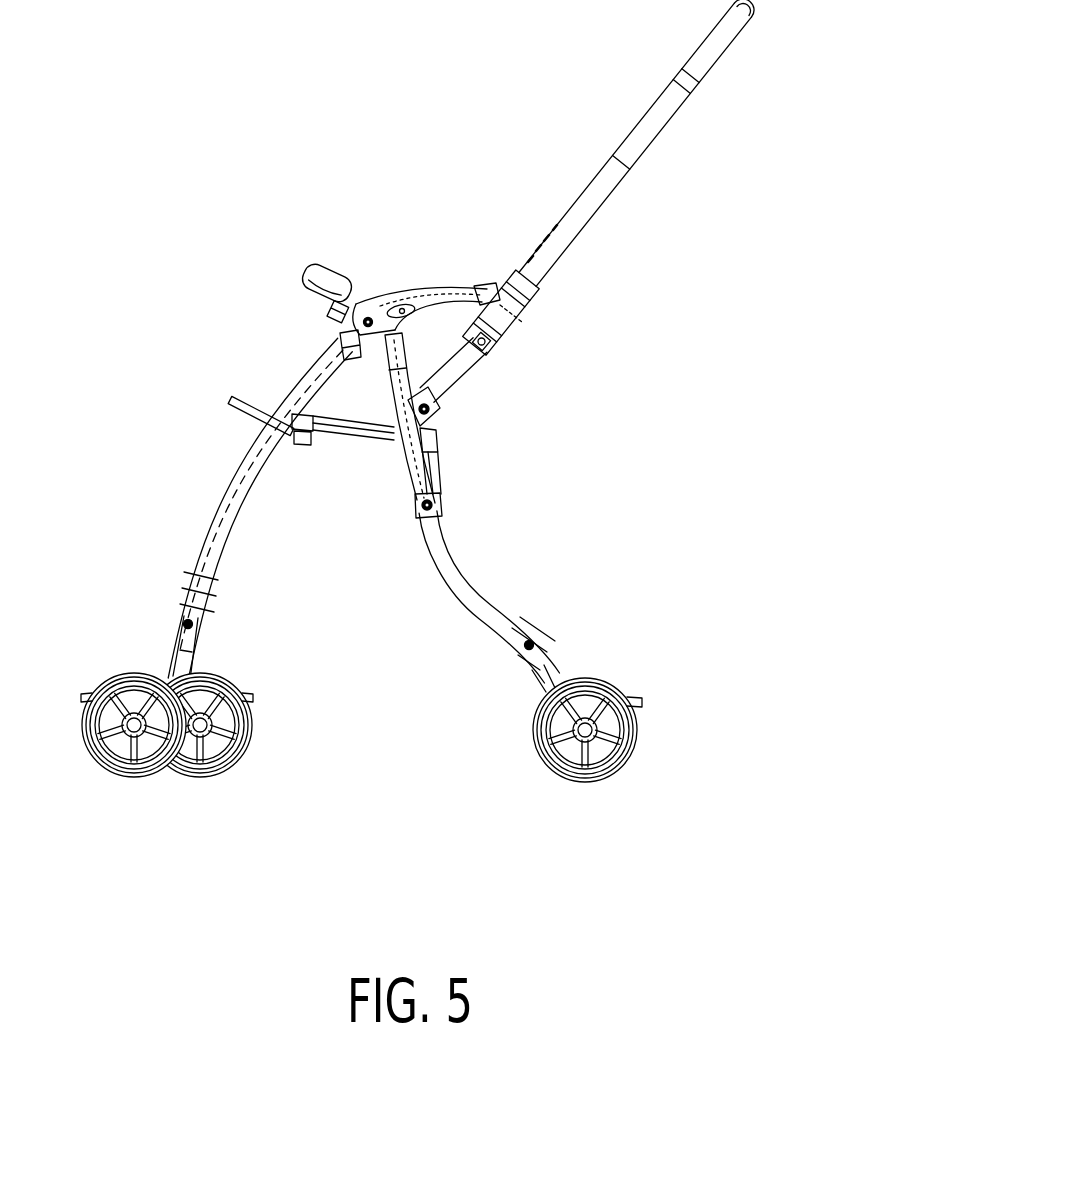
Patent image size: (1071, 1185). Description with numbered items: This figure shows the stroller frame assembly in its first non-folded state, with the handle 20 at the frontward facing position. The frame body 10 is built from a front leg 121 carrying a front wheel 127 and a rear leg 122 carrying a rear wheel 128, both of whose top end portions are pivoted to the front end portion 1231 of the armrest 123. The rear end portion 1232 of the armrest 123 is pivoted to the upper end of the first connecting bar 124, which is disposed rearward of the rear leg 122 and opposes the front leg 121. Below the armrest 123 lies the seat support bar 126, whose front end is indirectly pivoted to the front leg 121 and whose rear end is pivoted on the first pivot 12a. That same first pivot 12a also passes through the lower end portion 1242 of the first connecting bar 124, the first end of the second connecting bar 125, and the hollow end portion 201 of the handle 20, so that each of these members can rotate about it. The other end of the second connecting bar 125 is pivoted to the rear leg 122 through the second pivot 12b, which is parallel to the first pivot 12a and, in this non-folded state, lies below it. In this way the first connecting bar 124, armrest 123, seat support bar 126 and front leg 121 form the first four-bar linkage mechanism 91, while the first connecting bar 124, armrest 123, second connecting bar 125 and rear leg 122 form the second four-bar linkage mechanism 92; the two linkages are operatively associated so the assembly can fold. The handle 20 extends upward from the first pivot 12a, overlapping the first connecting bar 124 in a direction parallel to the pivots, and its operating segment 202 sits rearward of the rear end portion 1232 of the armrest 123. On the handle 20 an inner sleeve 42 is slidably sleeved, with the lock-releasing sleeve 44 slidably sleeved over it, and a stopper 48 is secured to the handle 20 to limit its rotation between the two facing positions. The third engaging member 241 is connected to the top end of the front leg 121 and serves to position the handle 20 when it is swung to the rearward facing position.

The frame body 10 is at (316, 423).
The handle 20 is at (562, 243).
The operating segment 202 is at (730, 42).
The end portion 201 is at (433, 400).
The first pivot 12a is at (433, 415).
The second pivot 12b is at (438, 505).
The front leg 121 is at (240, 505).
The rear leg 122 is at (497, 603).
The armrest 123 is at (440, 293).
The front end portion 1231 is at (360, 297).
The rear end portion 1232 is at (478, 293).
The first connecting bar 124 is at (511, 280).
The lower end portion 1242 is at (435, 418).
The second connecting bar 125 is at (438, 458).
The seat support bar 126 is at (303, 417).
The front wheel 127 is at (157, 763).
The rear wheel 128 is at (577, 770).
The third engaging member 241 is at (340, 328).
The inner sleeve 42 is at (510, 337).
The lock-releasing sleeve 44 is at (507, 312).
The stopper 48 is at (488, 348).
The first four-bar linkage mechanism 91 is at (308, 363).
The second four-bar linkage mechanism 92 is at (401, 463).